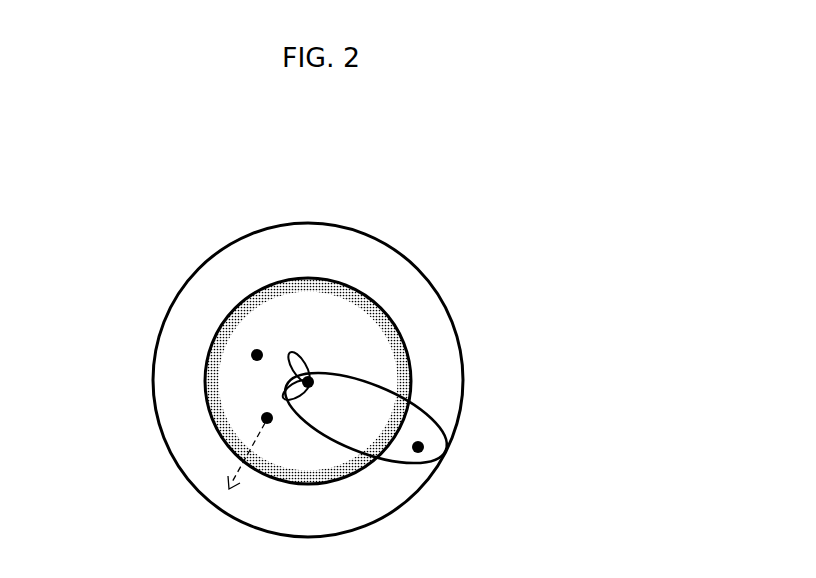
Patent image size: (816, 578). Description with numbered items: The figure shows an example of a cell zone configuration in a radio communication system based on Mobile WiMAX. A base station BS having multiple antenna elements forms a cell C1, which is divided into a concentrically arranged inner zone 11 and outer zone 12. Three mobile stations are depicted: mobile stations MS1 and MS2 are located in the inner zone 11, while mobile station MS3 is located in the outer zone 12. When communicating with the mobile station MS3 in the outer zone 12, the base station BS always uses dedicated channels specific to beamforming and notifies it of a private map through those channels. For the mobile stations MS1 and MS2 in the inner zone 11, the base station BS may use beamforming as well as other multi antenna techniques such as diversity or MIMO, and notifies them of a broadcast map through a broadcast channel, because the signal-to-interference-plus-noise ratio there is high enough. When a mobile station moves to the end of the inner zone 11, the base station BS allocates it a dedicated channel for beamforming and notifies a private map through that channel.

The cell C1 is at (256, 211).
The inner zone 11 is at (312, 323).
The outer zone 12 is at (440, 368).
The base station BS is at (309, 378).
The mobile station MS1 is at (266, 416).
The mobile station MS2 is at (256, 352).
The mobile station MS3 is at (423, 446).